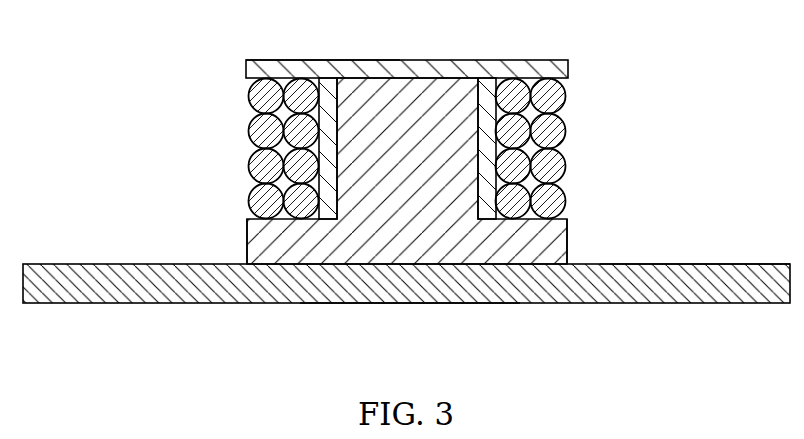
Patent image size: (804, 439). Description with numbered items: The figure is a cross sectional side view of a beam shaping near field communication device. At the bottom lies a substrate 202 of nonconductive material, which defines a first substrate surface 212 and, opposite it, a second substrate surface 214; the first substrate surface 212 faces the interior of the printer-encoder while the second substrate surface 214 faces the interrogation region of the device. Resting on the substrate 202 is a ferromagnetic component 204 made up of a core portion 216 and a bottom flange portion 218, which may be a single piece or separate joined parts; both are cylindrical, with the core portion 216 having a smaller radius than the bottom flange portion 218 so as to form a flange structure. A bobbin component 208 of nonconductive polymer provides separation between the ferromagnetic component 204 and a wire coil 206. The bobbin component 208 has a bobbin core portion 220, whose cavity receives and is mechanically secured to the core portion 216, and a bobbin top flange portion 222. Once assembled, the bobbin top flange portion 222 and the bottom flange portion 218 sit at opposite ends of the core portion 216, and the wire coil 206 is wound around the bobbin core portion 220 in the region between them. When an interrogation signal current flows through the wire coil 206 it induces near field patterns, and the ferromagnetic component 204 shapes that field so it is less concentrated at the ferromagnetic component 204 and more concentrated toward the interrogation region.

The substrate 202 is at (164, 272).
The ferromagnetic component 204 is at (568, 230).
The wire coil 206 is at (567, 130).
The bobbin component 208 is at (500, 60).
The first substrate surface 212 is at (407, 305).
The second substrate surface 214 is at (736, 264).
The core portion 216 is at (422, 113).
The bottom flange portion 218 is at (249, 243).
The bobbin core portion 220 is at (330, 126).
The bobbin top flange portion 222 is at (311, 69).